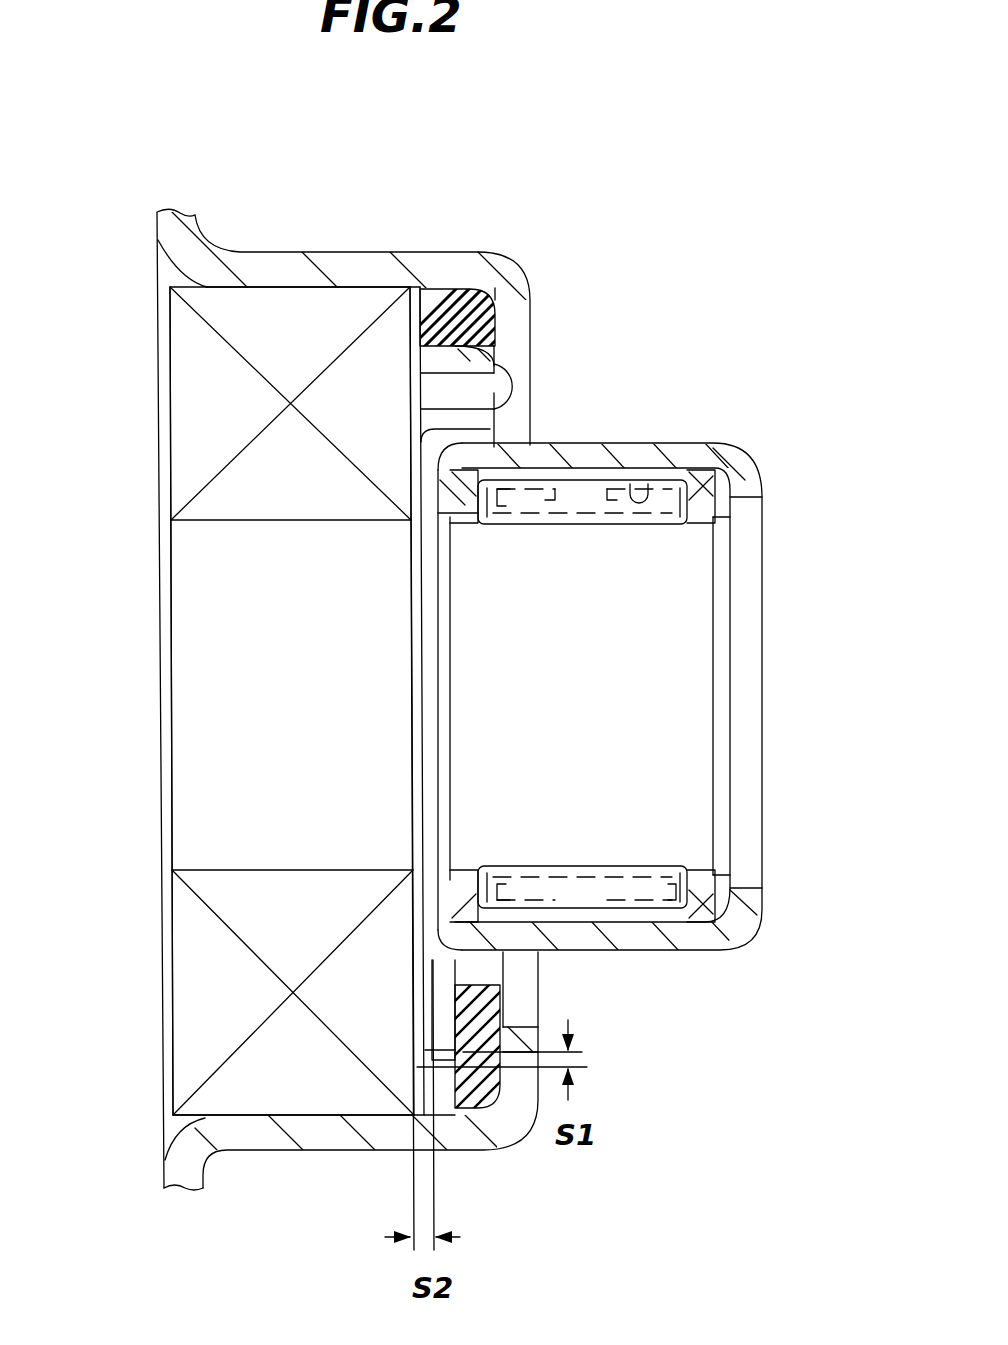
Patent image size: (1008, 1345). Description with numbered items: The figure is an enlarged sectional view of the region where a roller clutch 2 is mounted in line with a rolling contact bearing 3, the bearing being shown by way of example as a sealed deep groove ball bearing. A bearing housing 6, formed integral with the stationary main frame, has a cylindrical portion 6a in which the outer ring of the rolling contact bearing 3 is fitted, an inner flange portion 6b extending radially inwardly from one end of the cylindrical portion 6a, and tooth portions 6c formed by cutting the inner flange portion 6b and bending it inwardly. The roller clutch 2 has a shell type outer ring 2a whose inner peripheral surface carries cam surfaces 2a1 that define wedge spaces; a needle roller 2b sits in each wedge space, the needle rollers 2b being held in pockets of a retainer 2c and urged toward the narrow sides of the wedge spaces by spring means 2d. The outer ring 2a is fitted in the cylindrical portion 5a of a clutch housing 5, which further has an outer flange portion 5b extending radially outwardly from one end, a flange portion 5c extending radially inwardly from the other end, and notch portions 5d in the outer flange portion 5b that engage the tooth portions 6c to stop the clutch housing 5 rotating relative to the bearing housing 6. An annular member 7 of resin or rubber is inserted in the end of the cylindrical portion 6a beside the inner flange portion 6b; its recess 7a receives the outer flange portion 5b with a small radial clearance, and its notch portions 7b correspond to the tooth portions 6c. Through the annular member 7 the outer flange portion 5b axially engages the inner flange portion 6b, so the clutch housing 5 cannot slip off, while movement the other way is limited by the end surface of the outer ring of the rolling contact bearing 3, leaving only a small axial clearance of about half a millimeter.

The roller clutch 2 is at (742, 557).
The outer ring 2a is at (582, 480).
The cam surfaces 2a1 is at (641, 497).
The needle roller 2b is at (510, 525).
The retainer 2c is at (700, 507).
The spring means 2d is at (570, 870).
The rolling contact bearing 3 is at (142, 348).
The clutch housing 5 is at (741, 448).
The cylindrical portion 5a is at (596, 950).
The outer flange portion 5b is at (440, 1030).
The flange portion 5c is at (756, 474).
The notch portions 5d is at (437, 428).
The bearing housing 6 is at (511, 258).
The cylindrical portion 6a is at (318, 265).
The inner flange portion 6b is at (523, 318).
The tooth portions 6c is at (440, 394).
The annular member 7 is at (446, 290).
The recess 7a is at (455, 1062).
The notch portions 7b is at (482, 354).